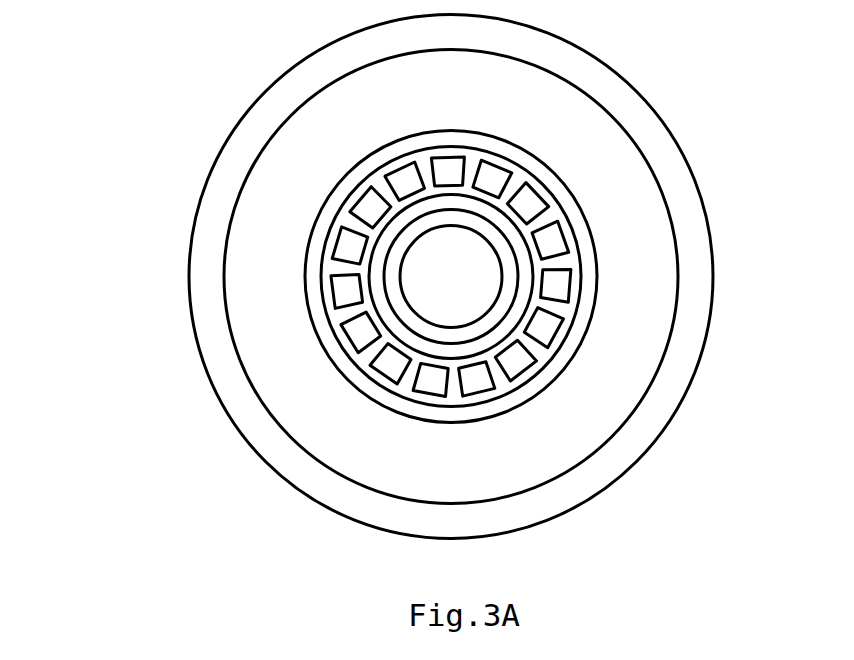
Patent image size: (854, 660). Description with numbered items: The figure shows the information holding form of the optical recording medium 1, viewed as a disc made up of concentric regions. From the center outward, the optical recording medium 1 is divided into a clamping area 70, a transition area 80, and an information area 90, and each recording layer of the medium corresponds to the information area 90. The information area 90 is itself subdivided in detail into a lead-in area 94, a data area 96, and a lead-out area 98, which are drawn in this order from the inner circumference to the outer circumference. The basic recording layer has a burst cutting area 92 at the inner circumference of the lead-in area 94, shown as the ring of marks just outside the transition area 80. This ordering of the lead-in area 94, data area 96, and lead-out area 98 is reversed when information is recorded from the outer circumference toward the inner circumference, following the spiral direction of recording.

The optical recording medium 1 is at (412, 269).
The information area 90 is at (102, 150).
The burst cutting area (BCA) 92 is at (372, 208).
The lead-in area 94 is at (313, 238).
The data area 96 is at (263, 300).
The lead-out area 98 is at (216, 358).
The clamping area 70 is at (513, 275).
The transition area 80 is at (525, 321).